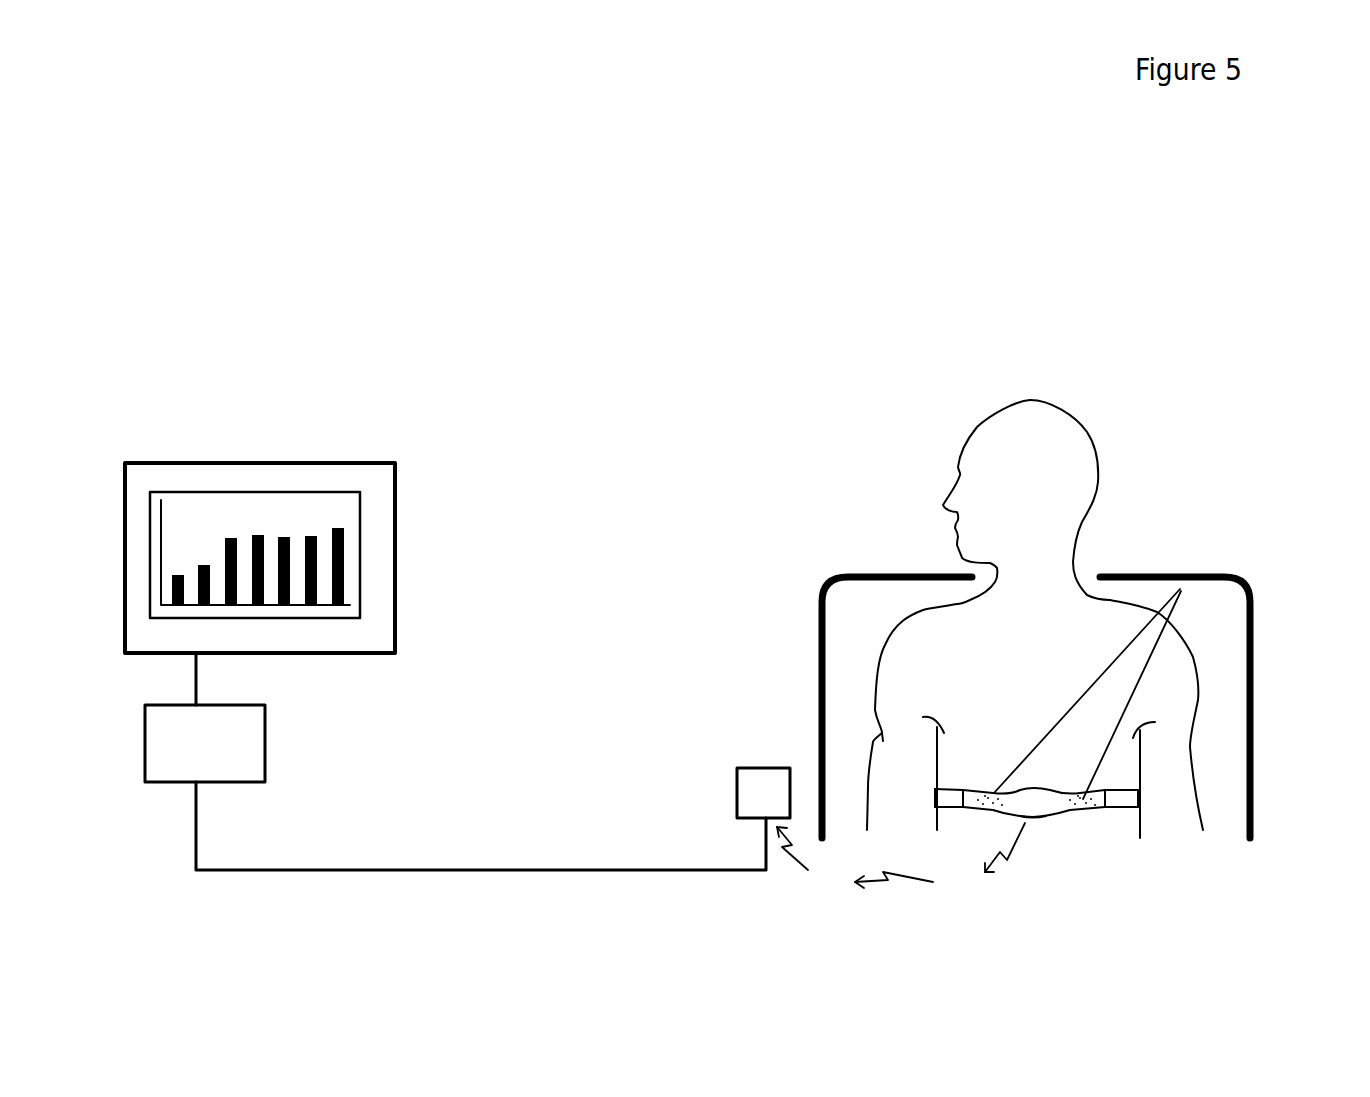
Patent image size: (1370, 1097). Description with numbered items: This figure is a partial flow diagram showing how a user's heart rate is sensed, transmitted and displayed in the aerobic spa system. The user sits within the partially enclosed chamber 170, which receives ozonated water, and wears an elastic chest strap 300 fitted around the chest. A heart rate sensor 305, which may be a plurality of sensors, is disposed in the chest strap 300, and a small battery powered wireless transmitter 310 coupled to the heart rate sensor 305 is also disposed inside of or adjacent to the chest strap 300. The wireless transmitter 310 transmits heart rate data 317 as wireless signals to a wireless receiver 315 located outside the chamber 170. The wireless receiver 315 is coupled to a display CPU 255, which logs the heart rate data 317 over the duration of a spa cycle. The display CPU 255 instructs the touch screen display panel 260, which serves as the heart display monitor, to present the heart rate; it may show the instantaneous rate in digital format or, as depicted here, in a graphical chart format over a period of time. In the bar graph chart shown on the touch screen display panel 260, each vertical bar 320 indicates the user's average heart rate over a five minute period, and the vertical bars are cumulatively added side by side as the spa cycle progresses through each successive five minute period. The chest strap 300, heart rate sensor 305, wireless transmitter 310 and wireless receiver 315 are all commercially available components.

The chamber 170 is at (890, 573).
The display CPU 255 is at (238, 747).
The touch screen display panel 260 is at (345, 502).
The elastic chest strap 300 is at (1145, 792).
The heart rate sensor 305 is at (1180, 589).
The wireless transmitter 310 is at (1043, 818).
The wireless receiver 315 is at (750, 790).
The heart rate data 317 is at (890, 895).
The vertical bar 320 is at (345, 557).